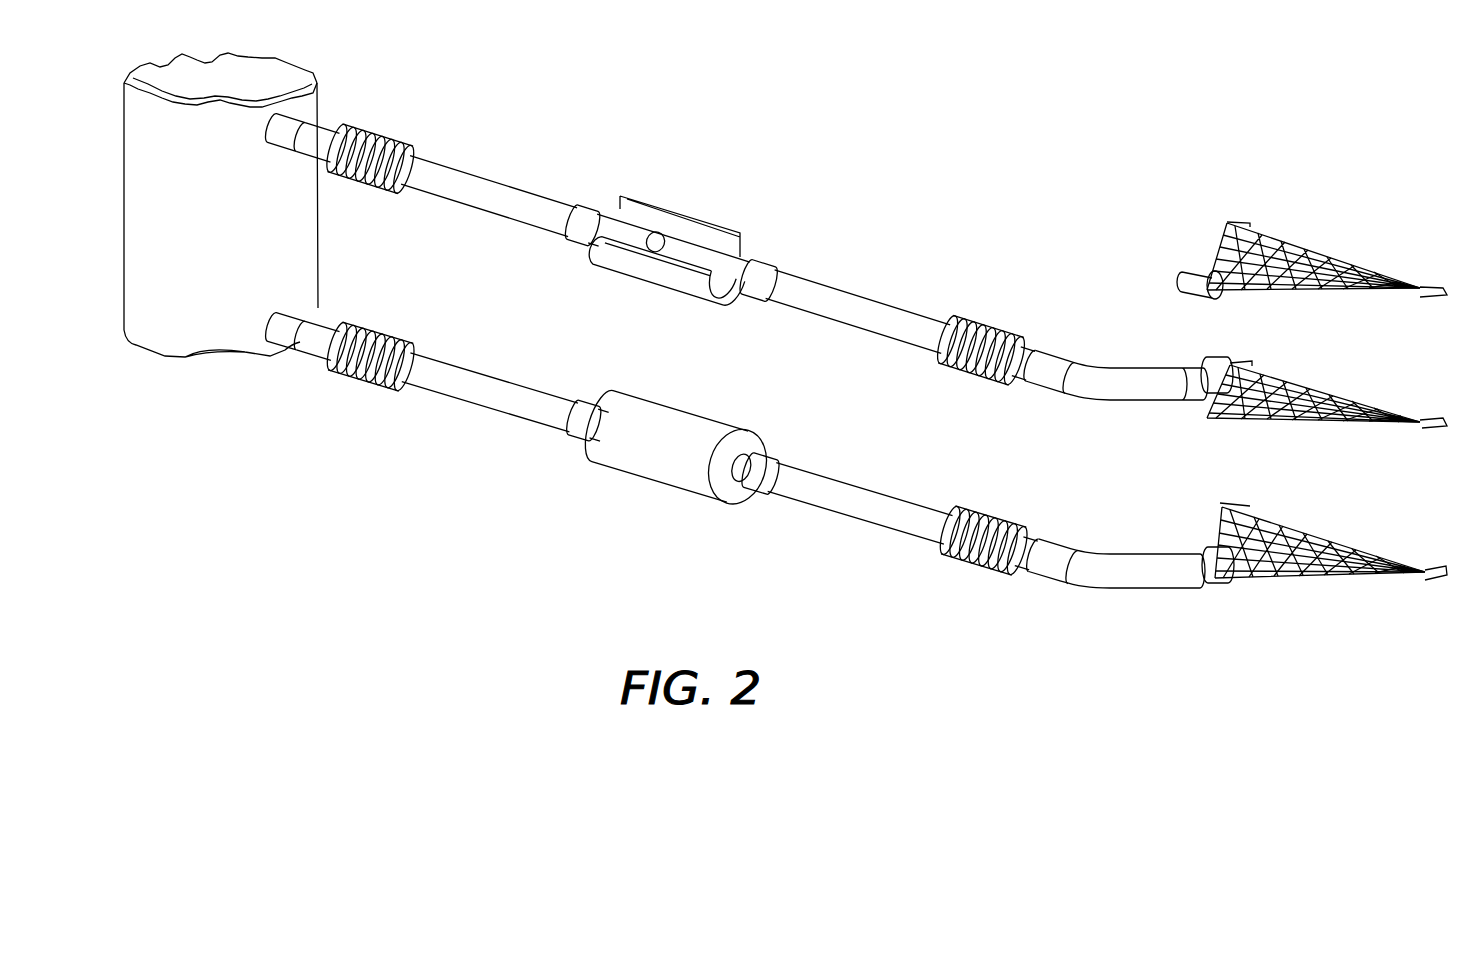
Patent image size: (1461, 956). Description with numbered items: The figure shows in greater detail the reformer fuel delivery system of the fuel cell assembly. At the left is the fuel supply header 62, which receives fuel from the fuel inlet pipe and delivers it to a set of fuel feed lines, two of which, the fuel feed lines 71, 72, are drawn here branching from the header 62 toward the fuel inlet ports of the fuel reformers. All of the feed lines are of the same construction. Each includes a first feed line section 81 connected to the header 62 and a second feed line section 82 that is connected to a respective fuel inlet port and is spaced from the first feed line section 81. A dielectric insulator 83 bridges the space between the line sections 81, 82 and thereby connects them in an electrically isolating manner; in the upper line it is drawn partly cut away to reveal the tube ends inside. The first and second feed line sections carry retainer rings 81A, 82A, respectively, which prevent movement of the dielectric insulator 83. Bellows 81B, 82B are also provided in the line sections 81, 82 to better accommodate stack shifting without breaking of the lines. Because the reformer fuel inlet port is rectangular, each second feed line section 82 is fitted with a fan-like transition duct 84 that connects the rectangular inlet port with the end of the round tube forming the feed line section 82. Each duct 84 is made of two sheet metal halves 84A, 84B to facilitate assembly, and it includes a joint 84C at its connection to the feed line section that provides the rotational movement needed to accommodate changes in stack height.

The fuel supply header 62 is at (212, 333).
The fuel feed line 71 is at (436, 156).
The fuel feed line 72 is at (438, 348).
The first feed line section 81 is at (487, 200).
The retainer ring 81A is at (577, 230).
The bellows 81B is at (390, 137).
The second feed line section 82 is at (843, 305).
The retainer ring 82A is at (757, 255).
The bellows 82B is at (993, 318).
The dielectric insulator 83 is at (693, 225).
The fan-like transition duct 84 is at (1313, 538).
The sheet metal half 84A is at (1297, 258).
The sheet metal half 84B is at (1297, 395).
The joint 84C is at (1212, 565).